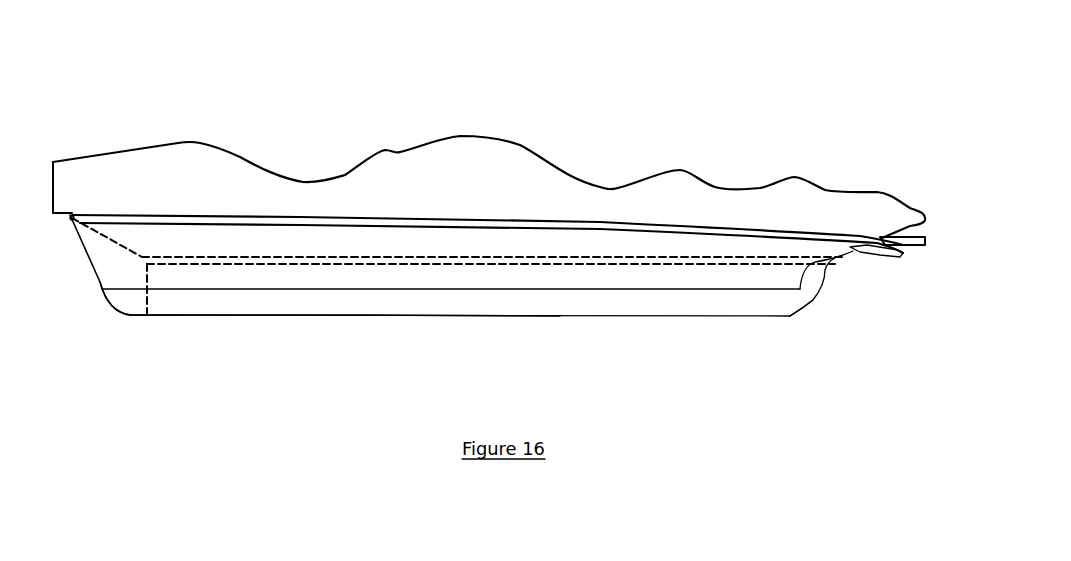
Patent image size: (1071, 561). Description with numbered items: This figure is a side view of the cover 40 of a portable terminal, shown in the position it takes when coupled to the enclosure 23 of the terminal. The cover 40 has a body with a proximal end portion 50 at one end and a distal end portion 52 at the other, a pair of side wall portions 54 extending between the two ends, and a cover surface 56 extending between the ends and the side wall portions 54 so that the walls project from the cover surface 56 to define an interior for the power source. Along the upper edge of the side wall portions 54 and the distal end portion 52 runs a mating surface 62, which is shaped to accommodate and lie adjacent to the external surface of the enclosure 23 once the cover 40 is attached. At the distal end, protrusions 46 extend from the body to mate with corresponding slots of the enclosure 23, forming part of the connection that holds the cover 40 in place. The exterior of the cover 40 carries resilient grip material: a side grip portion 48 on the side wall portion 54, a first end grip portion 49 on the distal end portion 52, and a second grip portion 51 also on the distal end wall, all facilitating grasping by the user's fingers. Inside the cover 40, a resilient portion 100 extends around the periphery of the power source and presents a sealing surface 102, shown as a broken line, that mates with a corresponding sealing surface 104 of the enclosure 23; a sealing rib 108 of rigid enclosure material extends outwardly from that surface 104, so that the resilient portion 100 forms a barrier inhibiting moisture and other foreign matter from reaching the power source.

The enclosure 23 is at (552, 192).
The cover 40 is at (463, 333).
The protrusions 46 is at (910, 245).
The side grip portion 48 is at (588, 303).
The first end grip portion 49 is at (807, 300).
The proximal end portion 50 is at (110, 367).
The second grip portion 51 is at (880, 255).
The distal end portion 52 is at (827, 377).
The side wall portion 54 is at (115, 255).
The cover surface 56 is at (350, 316).
The mating surface 62 is at (493, 218).
The resilient portion 100 is at (520, 273).
The sealing surface 102 is at (285, 268).
The sealing surface 104 is at (297, 255).
The sealing rib 108 is at (632, 255).